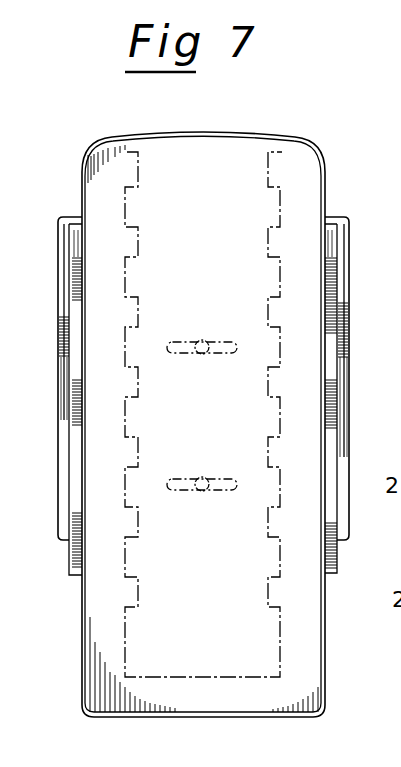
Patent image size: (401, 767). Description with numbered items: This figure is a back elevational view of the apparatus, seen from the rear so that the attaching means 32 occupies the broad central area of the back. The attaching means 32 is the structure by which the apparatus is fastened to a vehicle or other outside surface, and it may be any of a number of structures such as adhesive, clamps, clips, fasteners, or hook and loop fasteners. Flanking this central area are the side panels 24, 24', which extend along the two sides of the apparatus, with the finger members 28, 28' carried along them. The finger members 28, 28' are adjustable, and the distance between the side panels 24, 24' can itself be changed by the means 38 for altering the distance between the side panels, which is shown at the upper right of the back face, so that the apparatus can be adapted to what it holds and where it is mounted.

The means for attaching the apparatus to a vehicle surface 32 is at (221, 179).
The means for altering the distance between the side panels 38 is at (334, 207).
The side panel 24 is at (356, 398).
The side panel 24' is at (50, 399).
The finger member 28 is at (363, 348).
The finger member 28' is at (48, 372).